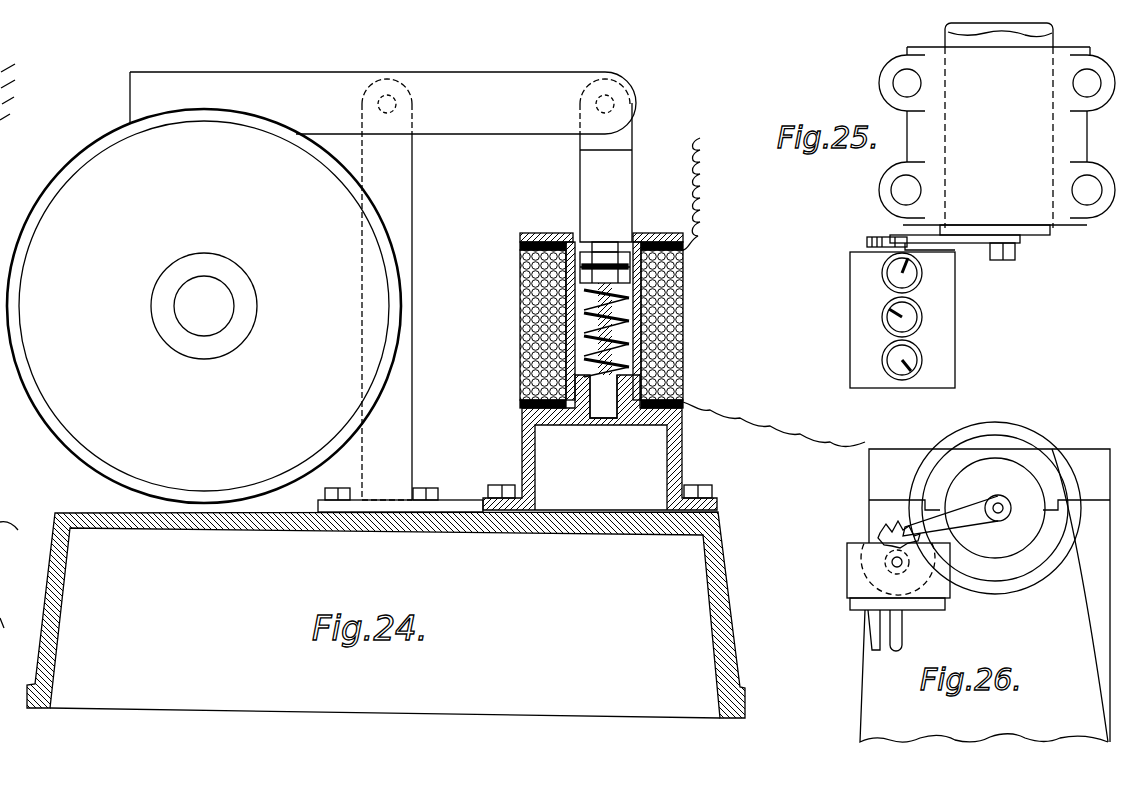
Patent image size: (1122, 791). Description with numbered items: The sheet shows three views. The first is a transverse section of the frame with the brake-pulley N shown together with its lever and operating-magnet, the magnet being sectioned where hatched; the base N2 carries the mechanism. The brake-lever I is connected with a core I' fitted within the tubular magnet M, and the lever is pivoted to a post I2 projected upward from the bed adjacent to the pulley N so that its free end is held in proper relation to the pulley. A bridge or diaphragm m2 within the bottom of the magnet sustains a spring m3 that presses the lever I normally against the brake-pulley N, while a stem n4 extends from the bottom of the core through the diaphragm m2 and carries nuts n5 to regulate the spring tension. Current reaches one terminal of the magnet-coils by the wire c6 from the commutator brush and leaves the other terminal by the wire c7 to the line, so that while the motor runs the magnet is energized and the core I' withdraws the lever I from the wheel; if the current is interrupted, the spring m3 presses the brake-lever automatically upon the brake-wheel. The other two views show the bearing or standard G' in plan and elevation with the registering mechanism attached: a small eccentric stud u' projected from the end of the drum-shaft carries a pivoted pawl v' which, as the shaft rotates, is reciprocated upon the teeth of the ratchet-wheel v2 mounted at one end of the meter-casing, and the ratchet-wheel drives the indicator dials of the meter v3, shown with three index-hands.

In FIG. 24, the brake-lever I is at (383, 103).
In FIG. 24, the core I' is at (606, 172).
In FIG. 24, the post I2 is at (413, 207).
In FIG. 24, the brake-pulley N is at (40, 226).
In FIG. 24, the base casting N2 is at (718, 511).
In FIG. 24, the tubular magnet M is at (574, 320).
In FIG. 24, the bridge or diaphragm m2 is at (585, 418).
In FIG. 24, the spring m3 is at (629, 294).
In FIG. 24, the stem n4 is at (604, 405).
In FIG. 24, the nuts n5 is at (605, 262).
In FIG. 24, the wire c6 is at (774, 420).
In FIG. 24, the wire c7 is at (706, 203).
In FIG. 25, the bearing or standard G' is at (997, 129).
In FIG. 26, the bearing or standard G' is at (985, 564).
In FIG. 25, the pawl v' is at (945, 265).
In FIG. 26, the pawl v' is at (950, 506).
In FIG. 25, the ratchet-wheel v2 is at (876, 237).
In FIG. 26, the ratchet-wheel v2 is at (880, 533).
In FIG. 25, the indicator box v3 is at (902, 320).
In FIG. 26, the indicator box v3 is at (932, 570).
In FIG. 25, the stud or bolt u' is at (975, 256).
In FIG. 26, the stud or bolt u' is at (1002, 524).